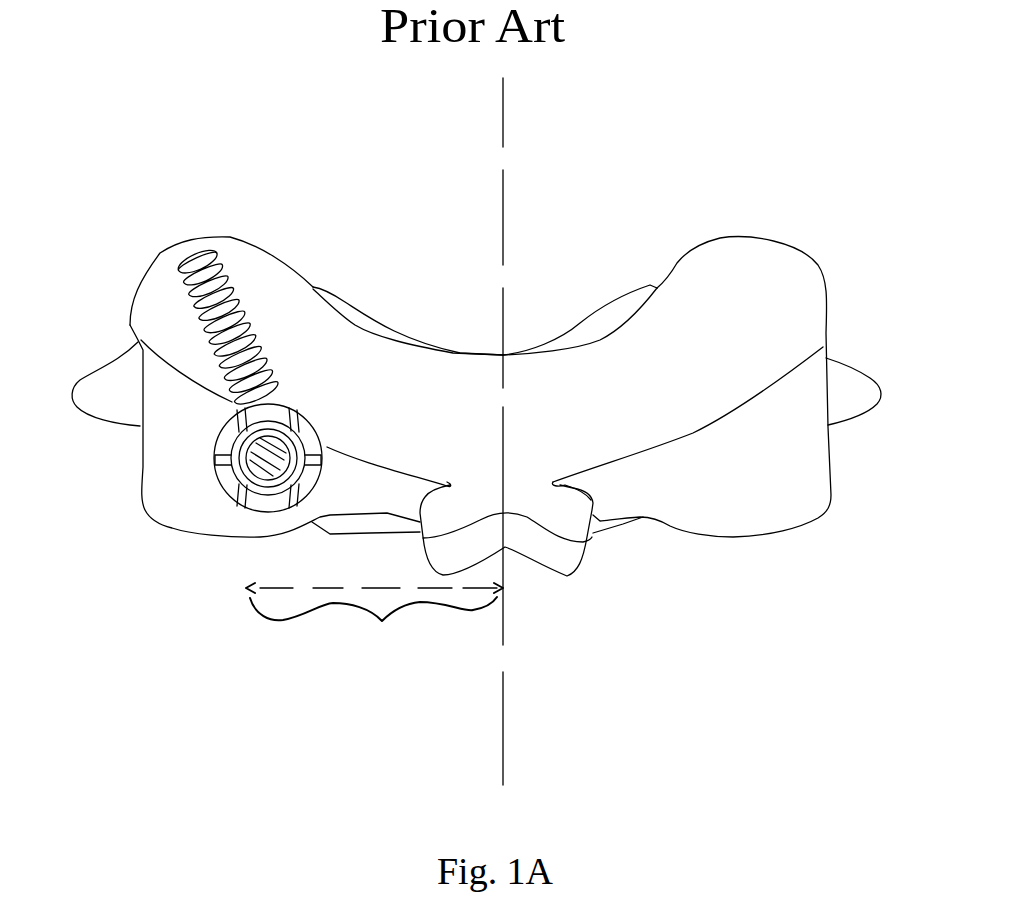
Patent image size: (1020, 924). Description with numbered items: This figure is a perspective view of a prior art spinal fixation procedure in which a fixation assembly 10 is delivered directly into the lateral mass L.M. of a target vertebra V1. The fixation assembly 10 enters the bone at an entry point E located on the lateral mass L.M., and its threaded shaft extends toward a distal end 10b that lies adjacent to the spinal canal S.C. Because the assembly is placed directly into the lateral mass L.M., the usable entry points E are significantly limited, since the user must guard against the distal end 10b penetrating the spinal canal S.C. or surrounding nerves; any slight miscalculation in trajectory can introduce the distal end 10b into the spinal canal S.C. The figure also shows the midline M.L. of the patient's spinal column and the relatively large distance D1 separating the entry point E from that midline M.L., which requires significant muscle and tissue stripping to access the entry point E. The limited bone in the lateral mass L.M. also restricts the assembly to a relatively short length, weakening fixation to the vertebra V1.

The midline M.L. is at (510, 108).
The lateral mass L.M. is at (139, 321).
The spinal canal S.C. is at (362, 273).
The target vertebra V1 is at (738, 272).
The fixation assembly 10 is at (279, 327).
The distal end 10b is at (213, 255).
The entry point E is at (222, 409).
The distance D1 is at (374, 623).